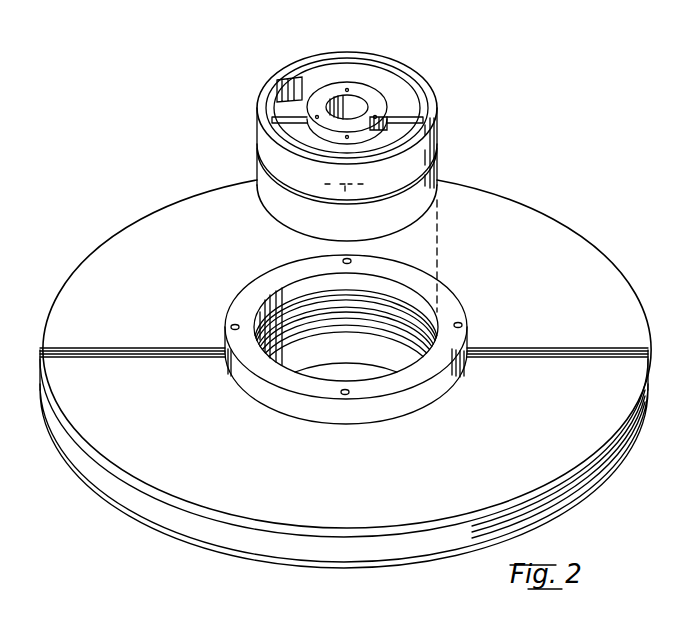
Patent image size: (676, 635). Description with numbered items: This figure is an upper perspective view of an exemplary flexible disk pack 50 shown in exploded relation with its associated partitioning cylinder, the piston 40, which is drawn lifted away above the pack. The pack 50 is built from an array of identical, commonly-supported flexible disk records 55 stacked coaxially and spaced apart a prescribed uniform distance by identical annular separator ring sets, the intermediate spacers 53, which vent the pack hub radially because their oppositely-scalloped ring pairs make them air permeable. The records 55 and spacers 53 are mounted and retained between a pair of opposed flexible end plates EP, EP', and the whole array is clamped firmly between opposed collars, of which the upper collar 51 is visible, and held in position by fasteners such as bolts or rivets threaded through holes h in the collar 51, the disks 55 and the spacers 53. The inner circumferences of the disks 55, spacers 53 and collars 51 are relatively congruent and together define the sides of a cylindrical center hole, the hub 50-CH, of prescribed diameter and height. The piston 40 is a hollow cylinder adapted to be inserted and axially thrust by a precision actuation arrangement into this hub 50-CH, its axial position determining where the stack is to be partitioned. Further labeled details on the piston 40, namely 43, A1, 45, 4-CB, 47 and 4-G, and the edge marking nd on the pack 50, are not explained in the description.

The flexible disk pack 50 is at (558, 202).
The flexible end plate EP is at (344, 381).
The flexible end plate EP' is at (344, 476).
The disc edge band nd is at (357, 558).
The collar 51 is at (432, 280).
The cylindrical center hole (hub) 50-CH is at (313, 283).
The holes h is at (461, 324).
The flexible disk records 55 is at (343, 312).
The intermediate spacers (annular separator ring sets) 53 is at (380, 327).
The piston (partitioning cylinder) 40 is at (440, 95).
The groove on cap 43 is at (438, 167).
The cap top slots A1 is at (438, 120).
The central boss 45 is at (387, 108).
The center bore 4-CB is at (357, 102).
The marker slots 47 is at (440, 147).
The cap guide line 4-G is at (437, 181).